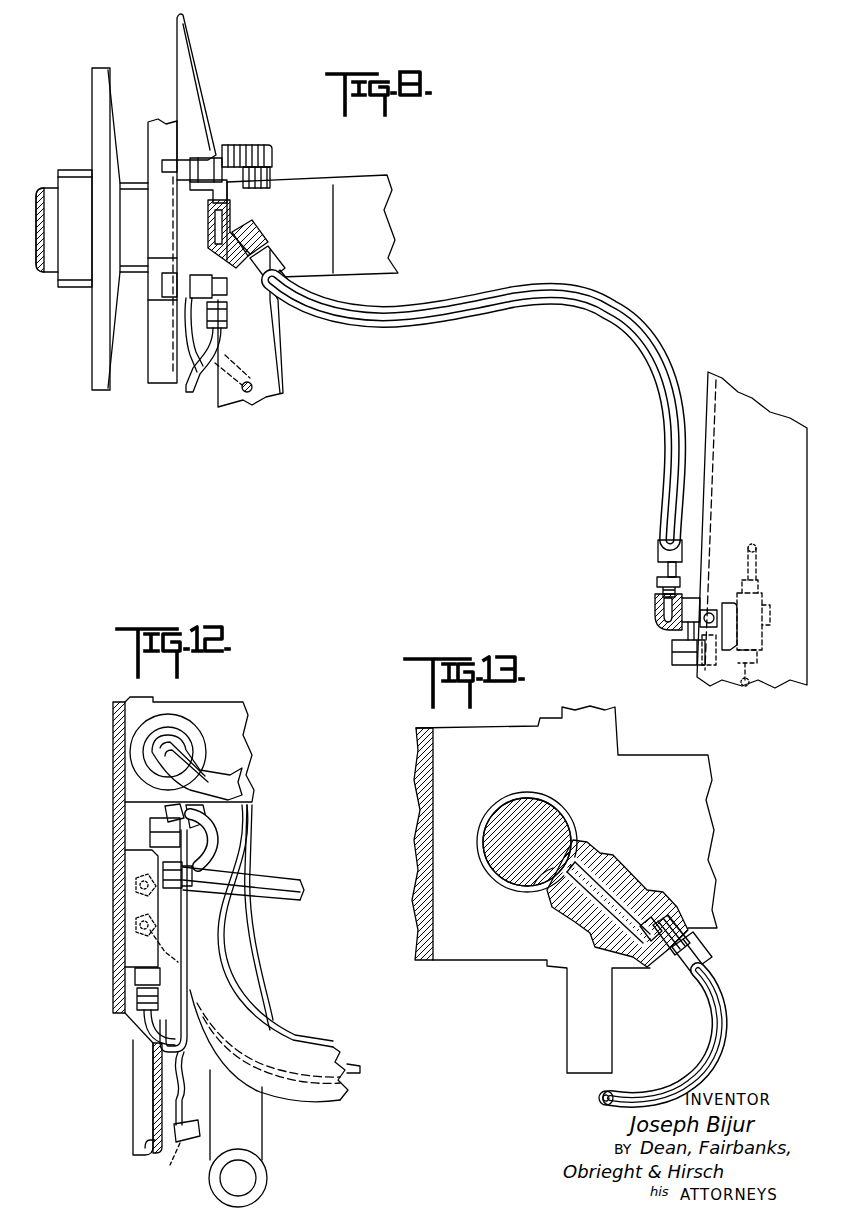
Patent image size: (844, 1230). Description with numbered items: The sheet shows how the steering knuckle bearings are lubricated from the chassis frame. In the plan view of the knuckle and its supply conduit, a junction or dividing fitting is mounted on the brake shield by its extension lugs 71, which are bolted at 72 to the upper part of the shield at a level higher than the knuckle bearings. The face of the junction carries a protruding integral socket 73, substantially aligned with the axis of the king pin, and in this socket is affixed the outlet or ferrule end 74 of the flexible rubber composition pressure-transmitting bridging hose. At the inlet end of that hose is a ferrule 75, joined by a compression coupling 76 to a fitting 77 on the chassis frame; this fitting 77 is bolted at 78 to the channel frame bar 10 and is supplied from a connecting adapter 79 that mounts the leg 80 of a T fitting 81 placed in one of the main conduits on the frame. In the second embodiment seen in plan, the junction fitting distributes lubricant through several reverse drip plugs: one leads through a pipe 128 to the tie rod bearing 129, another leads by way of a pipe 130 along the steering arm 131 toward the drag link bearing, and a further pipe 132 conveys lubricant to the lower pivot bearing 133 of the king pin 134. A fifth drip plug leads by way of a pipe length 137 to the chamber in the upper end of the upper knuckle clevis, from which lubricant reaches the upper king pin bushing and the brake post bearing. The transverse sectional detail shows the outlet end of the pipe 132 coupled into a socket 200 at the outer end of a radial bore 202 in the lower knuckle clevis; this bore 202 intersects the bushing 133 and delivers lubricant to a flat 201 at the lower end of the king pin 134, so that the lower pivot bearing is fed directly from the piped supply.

In FIG. 9, the channel frame bar 10 is at (790, 511).
In FIG. 9, the extension lugs 71 is at (186, 292).
In FIG. 9, the bolts 72 is at (229, 309).
In FIG. 9, the protruding integral socket 73 is at (231, 230).
In FIG. 9, the outlet or ferrule end 74 is at (258, 245).
In FIG. 9, the ferrule 75 is at (664, 568).
In FIG. 9, the compression coupling 76 is at (657, 581).
In FIG. 9, the fitting 77 is at (678, 632).
In FIG. 9, the bolt 78 is at (680, 668).
In FIG. 9, the connecting adapter 79 is at (712, 608).
In FIG. 9, the leg 80 is at (733, 638).
In FIG. 9, the T fitting 81 is at (763, 612).
In FIG. 12, the pipe 128 is at (178, 1146).
In FIG. 12, the tie rod bearing 129 is at (268, 1180).
In FIG. 12, the pipe 130 is at (353, 1063).
In FIG. 12, the steering arm 131 is at (300, 1045).
In FIG. 12, the pipe 132 is at (220, 852).
In FIG. 13, the pipe 132 is at (720, 1010).
In FIG. 13, the lower pivot bearing 133 is at (557, 803).
In FIG. 13, the king pin 134 is at (513, 810).
In FIG. 12, the pipe length 137 is at (187, 952).
In FIG. 13, the socket 200 is at (678, 912).
In FIG. 13, the flat 201 is at (530, 887).
In FIG. 13, the radial bore 202 is at (627, 868).